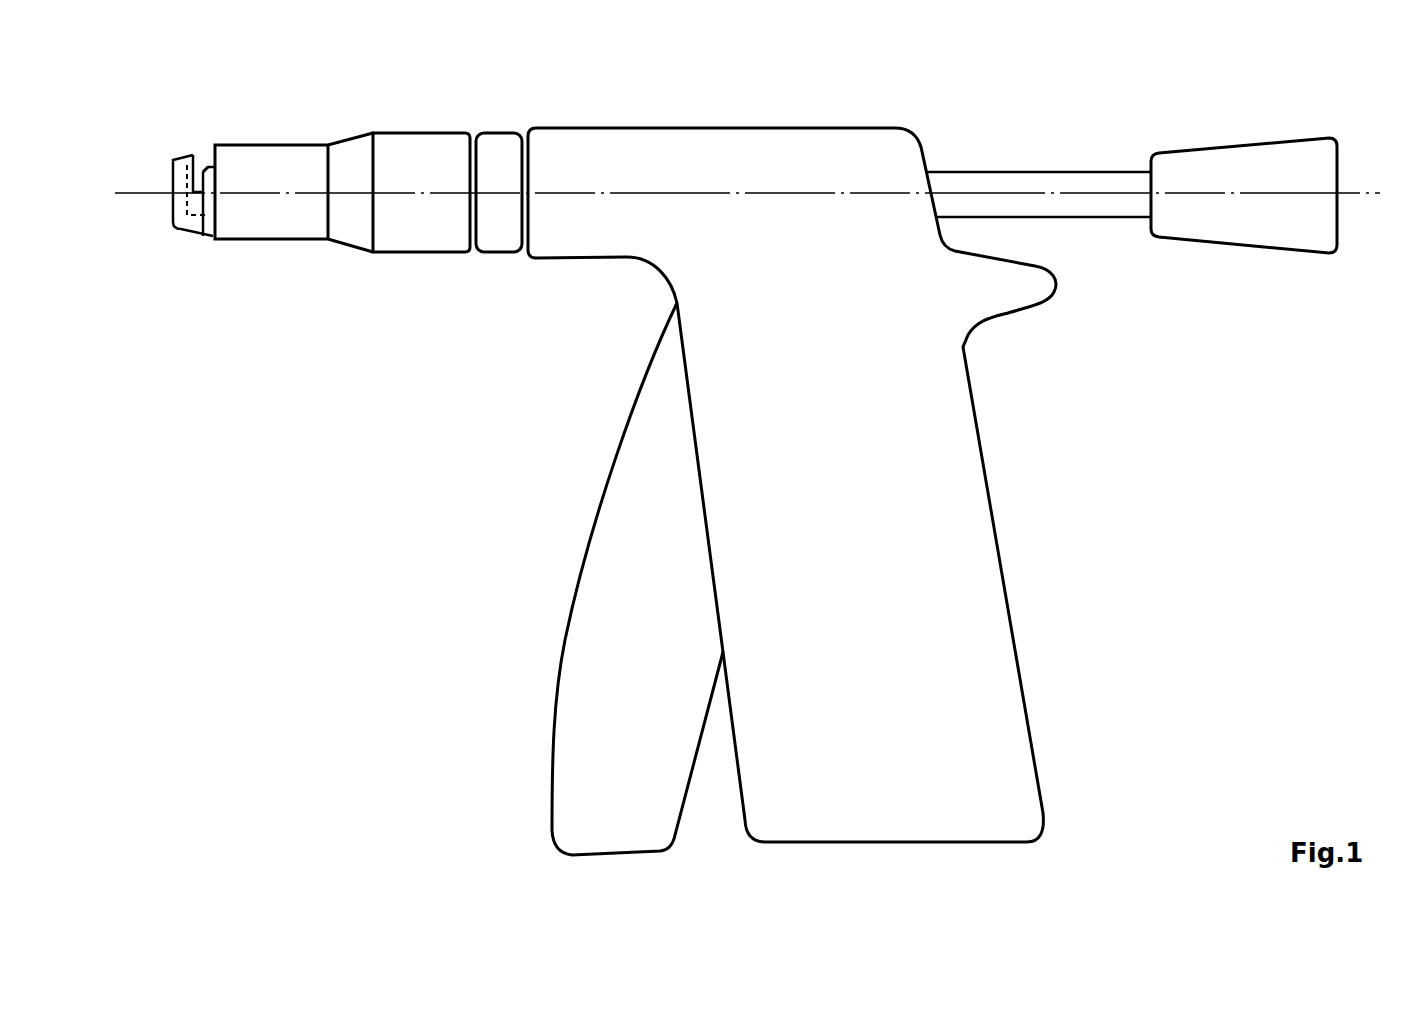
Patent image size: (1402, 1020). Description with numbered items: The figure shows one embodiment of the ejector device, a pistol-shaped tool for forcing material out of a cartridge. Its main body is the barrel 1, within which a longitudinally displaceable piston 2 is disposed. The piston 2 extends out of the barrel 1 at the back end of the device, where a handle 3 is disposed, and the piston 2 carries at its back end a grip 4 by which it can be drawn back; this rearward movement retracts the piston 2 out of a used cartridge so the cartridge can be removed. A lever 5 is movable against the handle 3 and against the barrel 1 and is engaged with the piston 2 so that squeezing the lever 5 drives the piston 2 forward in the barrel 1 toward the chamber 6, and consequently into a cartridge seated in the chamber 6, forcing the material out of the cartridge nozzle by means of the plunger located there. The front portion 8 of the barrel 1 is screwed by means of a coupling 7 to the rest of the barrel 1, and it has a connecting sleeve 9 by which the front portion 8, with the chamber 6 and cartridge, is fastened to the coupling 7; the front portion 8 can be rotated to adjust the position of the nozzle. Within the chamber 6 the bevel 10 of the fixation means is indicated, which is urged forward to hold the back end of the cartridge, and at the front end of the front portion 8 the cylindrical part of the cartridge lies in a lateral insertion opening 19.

The barrel 1 is at (738, 435).
The piston 2 is at (1075, 207).
The handle 3 is at (962, 555).
The grip 4 is at (1227, 220).
The lever 5 is at (588, 616).
The chamber 6 is at (205, 163).
The coupling 7 is at (503, 223).
The front portion of the barrel 8 is at (273, 215).
The connecting sleeve 9 is at (418, 222).
The bevel 10 is at (207, 215).
The lateral insertion opening 19 is at (180, 183).